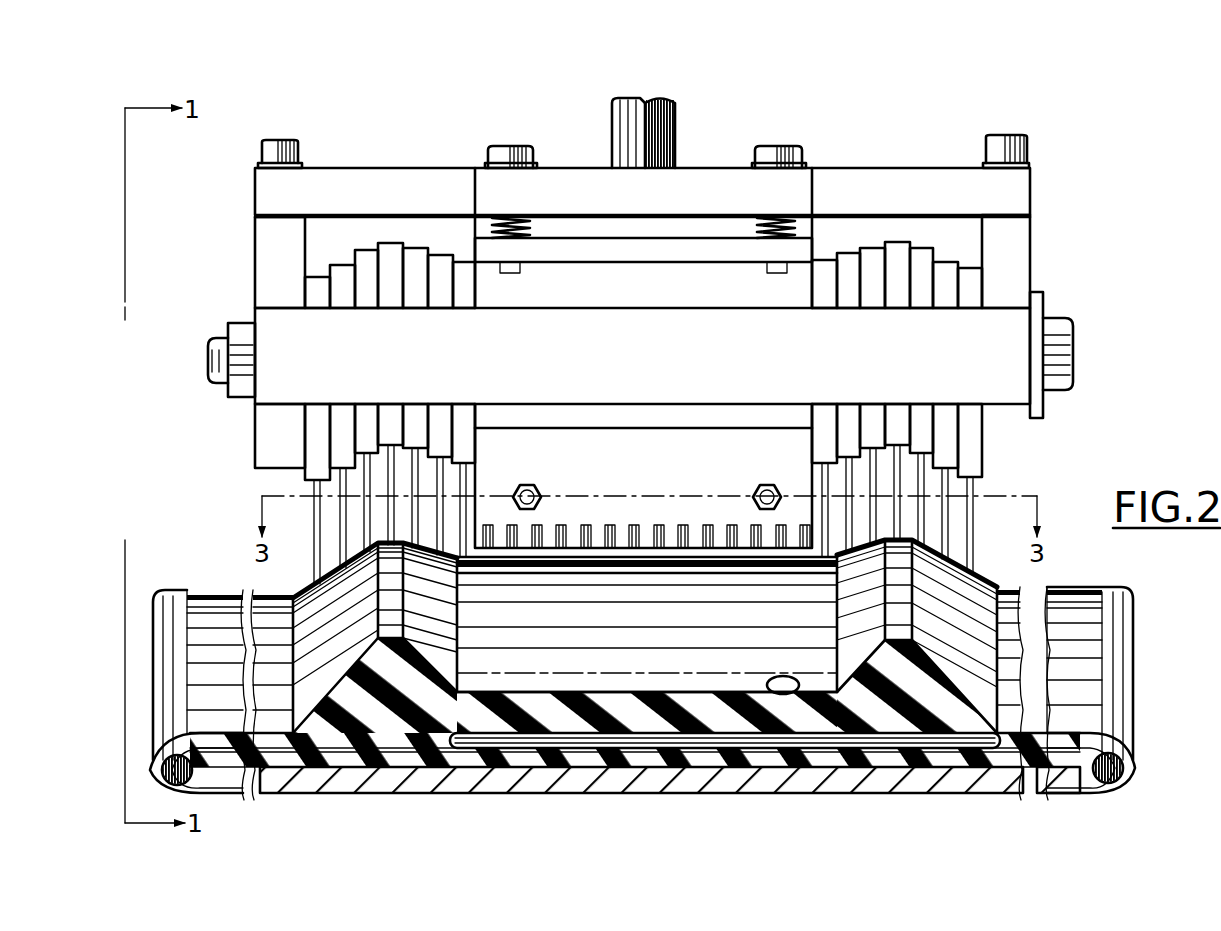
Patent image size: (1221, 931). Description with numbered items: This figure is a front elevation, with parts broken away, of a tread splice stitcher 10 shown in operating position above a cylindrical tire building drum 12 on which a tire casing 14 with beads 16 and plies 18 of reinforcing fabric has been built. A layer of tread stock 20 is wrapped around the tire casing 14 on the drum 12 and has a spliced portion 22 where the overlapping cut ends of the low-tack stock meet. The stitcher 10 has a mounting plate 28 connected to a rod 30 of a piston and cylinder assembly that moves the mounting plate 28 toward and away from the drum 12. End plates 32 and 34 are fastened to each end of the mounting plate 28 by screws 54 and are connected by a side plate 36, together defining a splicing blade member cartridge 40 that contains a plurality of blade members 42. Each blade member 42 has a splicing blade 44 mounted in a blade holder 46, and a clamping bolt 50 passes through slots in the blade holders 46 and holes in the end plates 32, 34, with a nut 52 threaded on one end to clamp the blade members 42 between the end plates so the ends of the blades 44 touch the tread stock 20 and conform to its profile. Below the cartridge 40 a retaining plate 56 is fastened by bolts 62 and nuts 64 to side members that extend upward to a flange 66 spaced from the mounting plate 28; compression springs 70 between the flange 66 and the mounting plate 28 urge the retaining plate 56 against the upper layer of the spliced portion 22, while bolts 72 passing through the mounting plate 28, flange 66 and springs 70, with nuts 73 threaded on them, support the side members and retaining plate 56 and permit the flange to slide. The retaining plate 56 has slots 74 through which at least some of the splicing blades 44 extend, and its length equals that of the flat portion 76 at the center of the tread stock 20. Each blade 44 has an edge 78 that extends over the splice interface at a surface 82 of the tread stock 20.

The tread splice stitcher 10 is at (1108, 142).
The tire building drum 12 is at (893, 785).
The tire casing 14 is at (175, 748).
The beads 16 is at (175, 785).
The plies 18 is at (715, 740).
The tread stock 20 is at (975, 632).
The spliced portion 22 is at (187, 600).
The mounting plate 28 is at (1020, 185).
The rod 30 is at (630, 123).
The end plate 32 is at (263, 276).
The end plate 34 is at (1020, 230).
The side plate 36 is at (268, 393).
The splicing blade member cartridge 40 is at (1048, 300).
The blade members 42 is at (357, 262).
The splicing blade 44 is at (365, 517).
The blade holder 46 is at (462, 267).
The clamping bolt 50 is at (1063, 347).
The nut 52 is at (240, 333).
The screws 54 is at (272, 150).
The retaining plate 56 is at (650, 507).
The bolts 62 is at (540, 490).
The nuts 64 is at (525, 483).
The flange 66 is at (712, 248).
The compression springs 70 is at (530, 213).
The bolts 72 is at (515, 143).
The nuts 73 is at (487, 160).
The slots 74 is at (620, 527).
The flat portion 76 is at (632, 677).
The edge 78 is at (360, 570).
The surface 82 is at (790, 692).